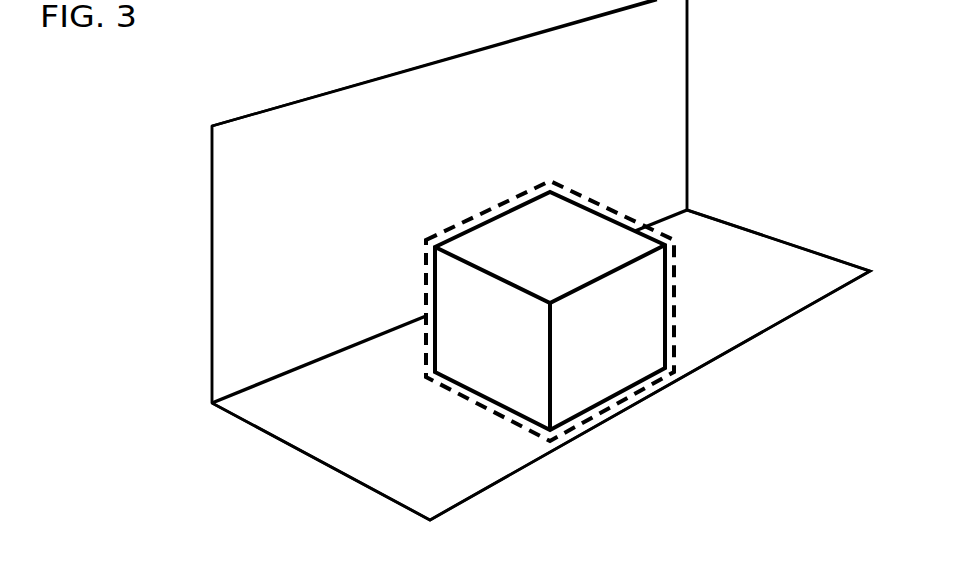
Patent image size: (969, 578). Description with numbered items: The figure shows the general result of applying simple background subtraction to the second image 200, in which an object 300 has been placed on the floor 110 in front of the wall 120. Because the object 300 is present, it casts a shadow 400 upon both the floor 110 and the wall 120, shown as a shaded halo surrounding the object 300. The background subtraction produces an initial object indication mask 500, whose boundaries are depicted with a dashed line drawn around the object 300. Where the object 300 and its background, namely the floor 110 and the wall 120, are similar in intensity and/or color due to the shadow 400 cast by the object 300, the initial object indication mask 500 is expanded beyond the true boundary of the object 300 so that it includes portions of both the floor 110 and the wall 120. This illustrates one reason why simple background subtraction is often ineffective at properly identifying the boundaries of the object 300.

The second image 200 is at (745, 88).
The wall 120 is at (280, 195).
The floor 110 is at (353, 425).
The shadow 400 is at (435, 202).
The object 300 is at (605, 352).
The initial object indication mask 500 is at (550, 447).